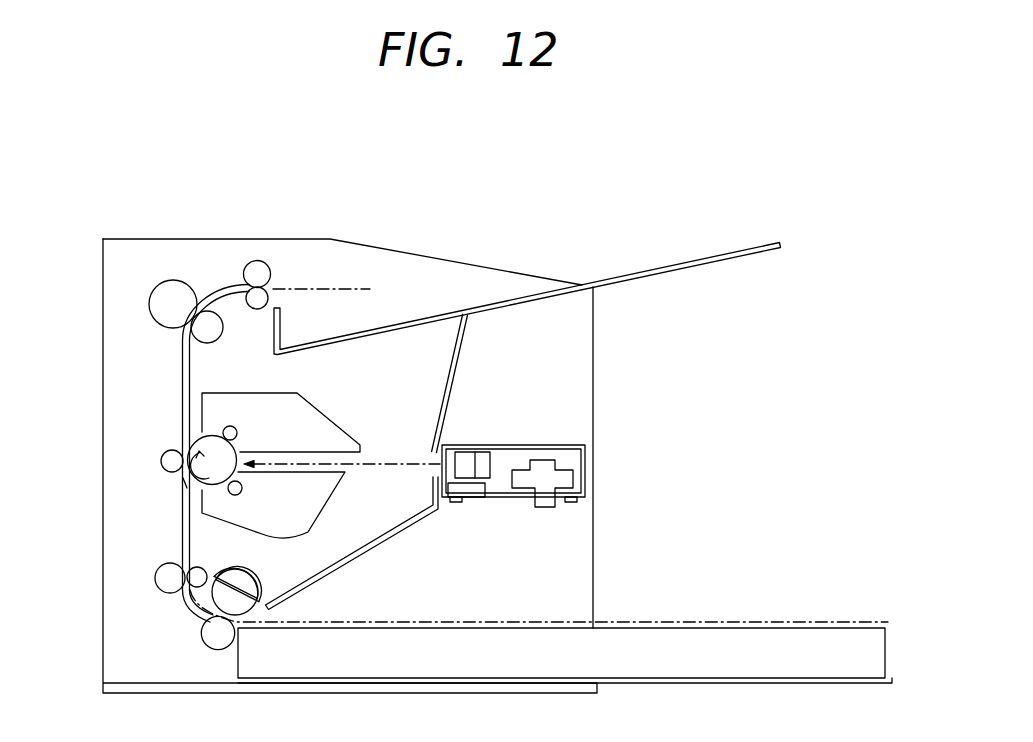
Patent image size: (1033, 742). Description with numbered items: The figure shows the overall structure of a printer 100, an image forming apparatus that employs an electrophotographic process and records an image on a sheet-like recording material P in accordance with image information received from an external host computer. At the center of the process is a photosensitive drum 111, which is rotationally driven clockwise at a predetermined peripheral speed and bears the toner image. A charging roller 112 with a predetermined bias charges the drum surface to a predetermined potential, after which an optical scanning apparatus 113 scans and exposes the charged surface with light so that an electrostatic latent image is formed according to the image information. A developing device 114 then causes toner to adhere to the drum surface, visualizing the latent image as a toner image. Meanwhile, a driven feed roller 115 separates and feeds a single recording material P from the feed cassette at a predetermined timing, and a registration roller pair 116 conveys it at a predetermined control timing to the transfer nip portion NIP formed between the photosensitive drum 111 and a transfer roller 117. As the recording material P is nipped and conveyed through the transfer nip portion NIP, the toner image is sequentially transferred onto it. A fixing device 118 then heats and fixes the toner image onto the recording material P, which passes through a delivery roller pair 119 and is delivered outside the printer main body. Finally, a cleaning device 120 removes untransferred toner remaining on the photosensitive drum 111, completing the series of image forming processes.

The printer 100 is at (161, 250).
The photosensitive drum 111 is at (212, 434).
The charging roller 112 is at (238, 427).
The optical scanning apparatus 113 is at (563, 457).
The developing device 114 is at (302, 503).
The feed roller 115 is at (258, 584).
The registration roller pair 116 is at (165, 582).
The transfer roller 117 is at (170, 452).
The fixing device 118 is at (209, 282).
The delivery roller pair 119 is at (268, 267).
The cleaning device 120 is at (324, 433).
The transfer nip portion NIP is at (177, 483).
The recording material P is at (697, 623).